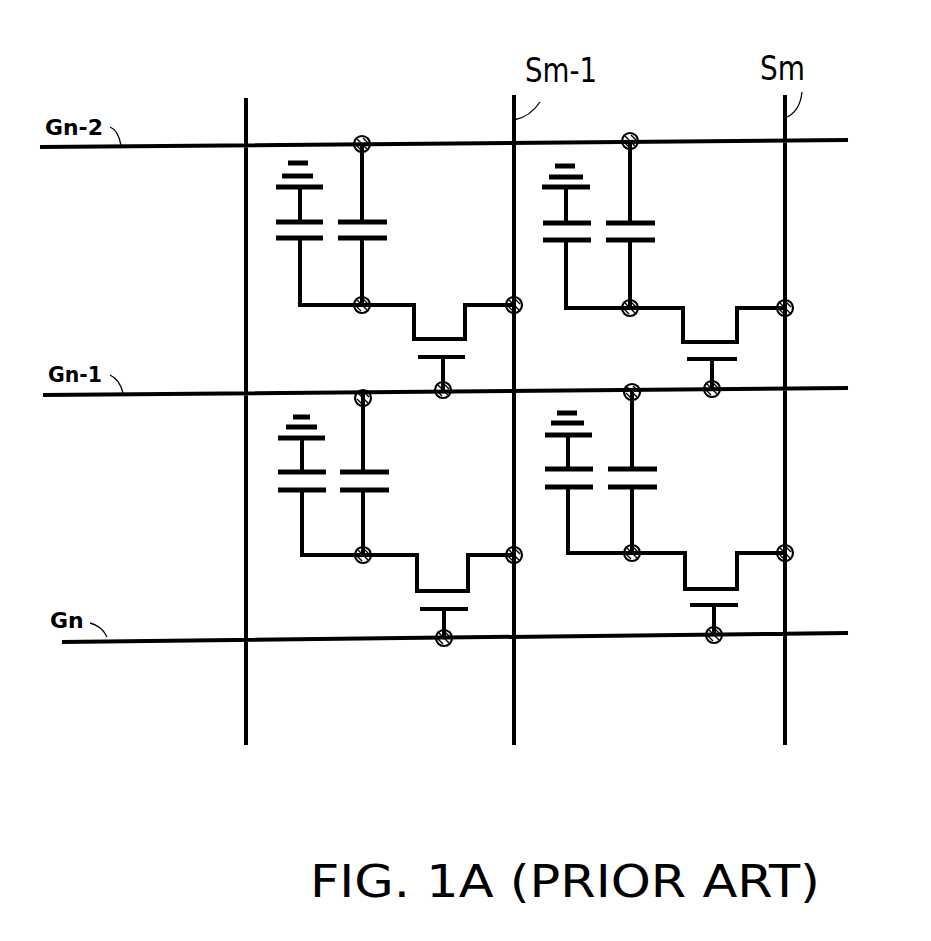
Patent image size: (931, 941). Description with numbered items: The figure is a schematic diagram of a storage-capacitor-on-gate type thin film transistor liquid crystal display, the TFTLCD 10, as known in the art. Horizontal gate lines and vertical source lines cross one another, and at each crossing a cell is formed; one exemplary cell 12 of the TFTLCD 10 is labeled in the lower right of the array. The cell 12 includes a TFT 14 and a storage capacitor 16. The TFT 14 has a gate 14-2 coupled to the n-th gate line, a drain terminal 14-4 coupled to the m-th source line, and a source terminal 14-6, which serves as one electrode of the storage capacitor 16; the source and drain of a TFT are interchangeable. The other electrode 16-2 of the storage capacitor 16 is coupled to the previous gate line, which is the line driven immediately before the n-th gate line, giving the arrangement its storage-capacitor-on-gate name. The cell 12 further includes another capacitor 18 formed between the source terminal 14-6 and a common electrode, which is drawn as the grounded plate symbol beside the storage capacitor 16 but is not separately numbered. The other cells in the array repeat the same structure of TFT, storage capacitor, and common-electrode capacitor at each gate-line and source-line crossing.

The TFTLCD 10 is at (207, 89).
The cell 12 is at (699, 525).
The TFT 14 is at (713, 606).
The gate 14-2 is at (712, 645).
The drain terminal 14-4 is at (797, 553).
The source terminal 14-6 is at (632, 562).
The storage capacitor 16 is at (643, 468).
The other electrode 16-2 is at (630, 388).
The capacitor 18 is at (563, 493).